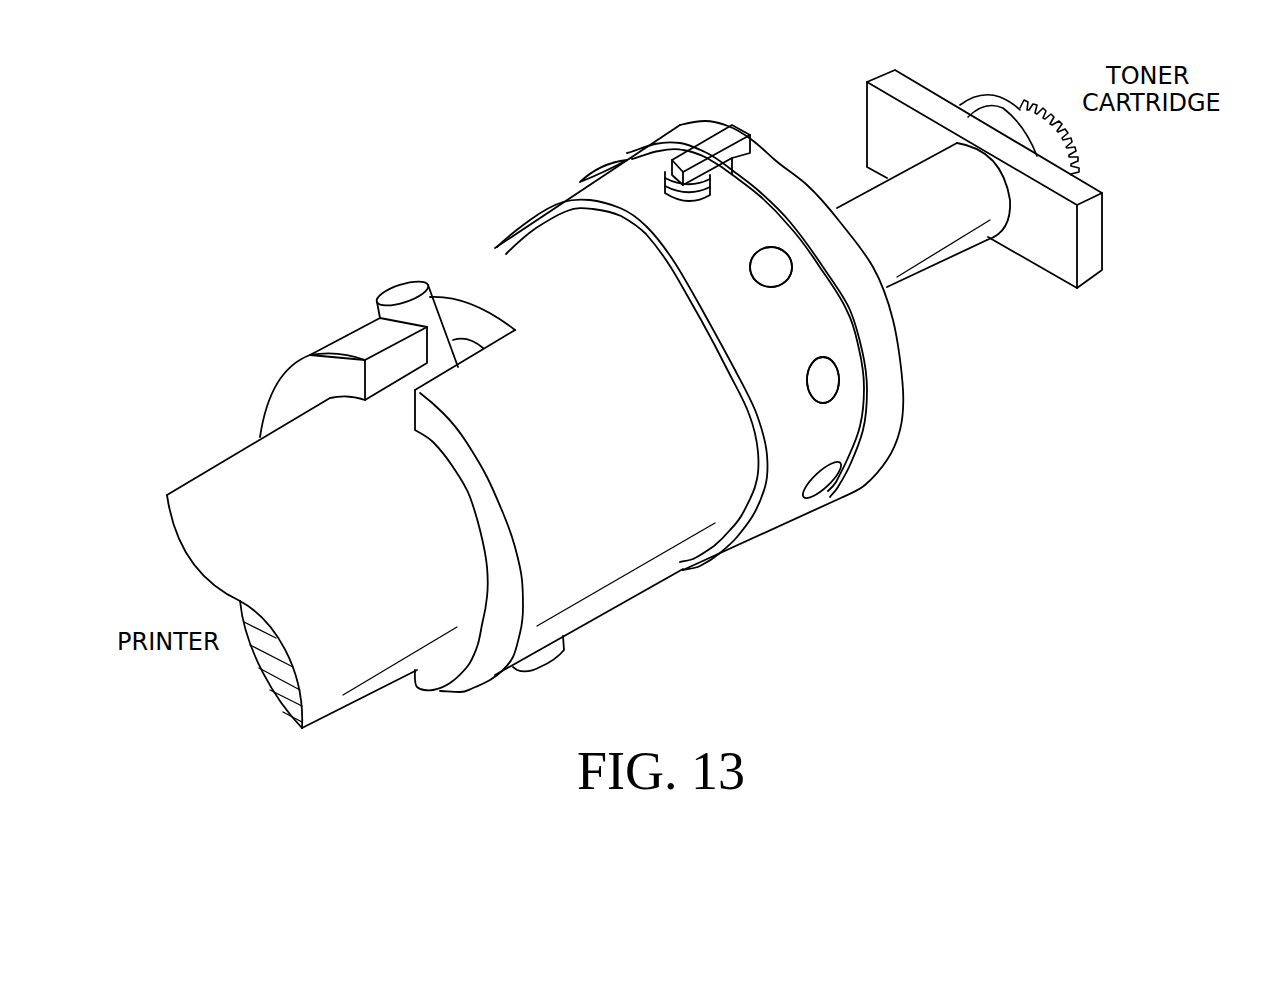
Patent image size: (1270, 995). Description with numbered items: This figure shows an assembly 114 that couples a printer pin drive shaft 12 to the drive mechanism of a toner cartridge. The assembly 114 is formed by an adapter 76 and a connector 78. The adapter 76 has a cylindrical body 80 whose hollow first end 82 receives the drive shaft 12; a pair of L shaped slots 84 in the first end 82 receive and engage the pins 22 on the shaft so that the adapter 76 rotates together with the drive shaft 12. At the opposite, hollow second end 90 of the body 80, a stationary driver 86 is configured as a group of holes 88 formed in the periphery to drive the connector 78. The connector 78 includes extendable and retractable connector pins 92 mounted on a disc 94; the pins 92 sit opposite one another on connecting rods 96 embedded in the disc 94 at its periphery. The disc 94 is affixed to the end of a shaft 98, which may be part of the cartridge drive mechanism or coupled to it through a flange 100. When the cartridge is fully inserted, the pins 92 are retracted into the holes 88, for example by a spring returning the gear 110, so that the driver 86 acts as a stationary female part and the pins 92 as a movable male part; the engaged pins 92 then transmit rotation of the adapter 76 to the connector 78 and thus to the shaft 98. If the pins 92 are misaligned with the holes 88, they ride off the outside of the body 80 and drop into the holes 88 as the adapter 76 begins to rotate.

The printer pin drive shaft 12 is at (233, 468).
The pins 22 is at (398, 293).
The adapter 76 is at (298, 310).
The connector 78 is at (938, 341).
The cylindrical body 80 is at (486, 262).
The hollow first end 82 is at (459, 672).
The L shaped slots 84 is at (480, 330).
The stationary driver 86 is at (667, 197).
The holes 88 is at (827, 382).
The hollow second end 90 is at (790, 503).
The connector pins 92 is at (709, 185).
The disc 94 is at (687, 138).
The connecting rods 96 is at (745, 172).
The shaft 98 is at (867, 195).
The flange 100 is at (893, 85).
The gear 110 is at (1080, 148).
The assembly 114 is at (924, 458).